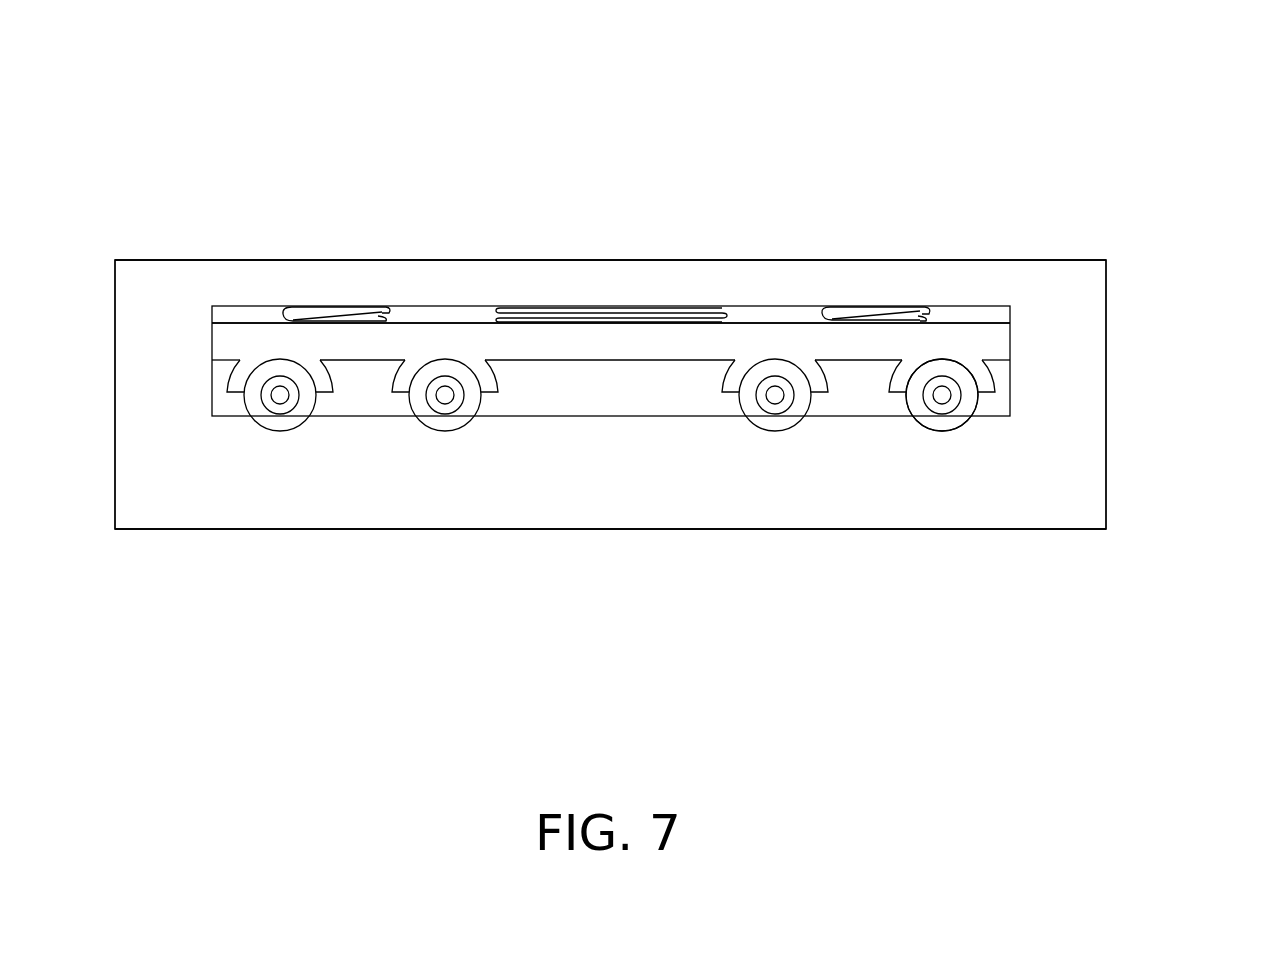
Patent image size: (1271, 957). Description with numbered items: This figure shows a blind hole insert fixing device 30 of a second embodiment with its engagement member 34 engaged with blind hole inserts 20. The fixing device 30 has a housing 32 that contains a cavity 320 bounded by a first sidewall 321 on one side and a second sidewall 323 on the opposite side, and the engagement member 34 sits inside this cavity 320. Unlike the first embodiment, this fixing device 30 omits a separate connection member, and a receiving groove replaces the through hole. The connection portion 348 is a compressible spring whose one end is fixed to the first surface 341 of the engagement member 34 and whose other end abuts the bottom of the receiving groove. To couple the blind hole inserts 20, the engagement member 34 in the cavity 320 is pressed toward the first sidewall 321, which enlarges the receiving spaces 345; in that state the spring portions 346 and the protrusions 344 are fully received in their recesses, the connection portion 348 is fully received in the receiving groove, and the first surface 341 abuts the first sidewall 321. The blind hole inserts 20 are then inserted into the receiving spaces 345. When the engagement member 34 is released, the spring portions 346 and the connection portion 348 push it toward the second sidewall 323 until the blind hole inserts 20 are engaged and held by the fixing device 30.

The blind hole insert fixing device 30 is at (484, 105).
The housing 32 is at (1070, 318).
The first sidewall 321 is at (855, 283).
The second sidewall 323 is at (752, 487).
The engagement member 34 is at (585, 343).
The cavity 320 is at (550, 383).
The first surface 341 is at (448, 323).
The protrusions 344 is at (348, 320).
The spring portions 346 is at (312, 308).
The connection portion 348 is at (573, 322).
The receiving spaces 345 is at (320, 397).
The blind hole inserts 20 is at (945, 423).